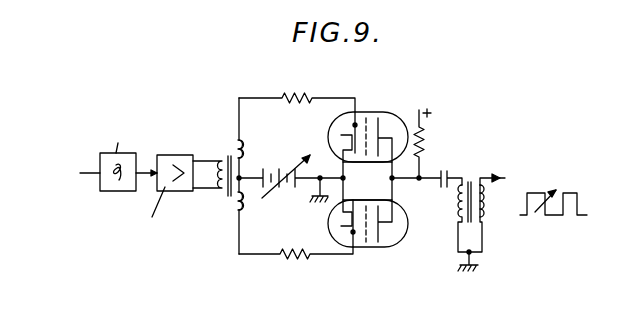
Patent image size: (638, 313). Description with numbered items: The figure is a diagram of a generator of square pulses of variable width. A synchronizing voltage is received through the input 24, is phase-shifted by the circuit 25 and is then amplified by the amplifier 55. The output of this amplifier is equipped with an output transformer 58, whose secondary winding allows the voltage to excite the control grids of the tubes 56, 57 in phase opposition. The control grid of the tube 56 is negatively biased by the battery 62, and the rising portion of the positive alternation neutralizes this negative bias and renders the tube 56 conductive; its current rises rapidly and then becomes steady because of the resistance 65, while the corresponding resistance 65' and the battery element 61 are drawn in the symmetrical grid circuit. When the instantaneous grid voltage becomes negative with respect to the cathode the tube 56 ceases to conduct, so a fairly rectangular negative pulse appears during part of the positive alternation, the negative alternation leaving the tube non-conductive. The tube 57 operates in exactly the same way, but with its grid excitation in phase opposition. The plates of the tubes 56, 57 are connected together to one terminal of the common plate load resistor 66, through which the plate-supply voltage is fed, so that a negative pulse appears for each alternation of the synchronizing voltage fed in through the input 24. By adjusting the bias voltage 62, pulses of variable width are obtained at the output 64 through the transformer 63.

The synchronizing voltage input 24 is at (86, 170).
The phase-shifting circuit 25 is at (114, 191).
The amplifier 55 is at (160, 199).
The output transformer 58 is at (226, 160).
The bias battery 61 is at (253, 170).
The bias battery 62 is at (281, 172).
The resistance 65 is at (297, 93).
The resistor 65' is at (296, 266).
The tube 56 is at (372, 112).
The tube 57 is at (368, 249).
The common plate load resistor 66 is at (424, 146).
The transformer 63 is at (470, 183).
The output 64 is at (505, 178).